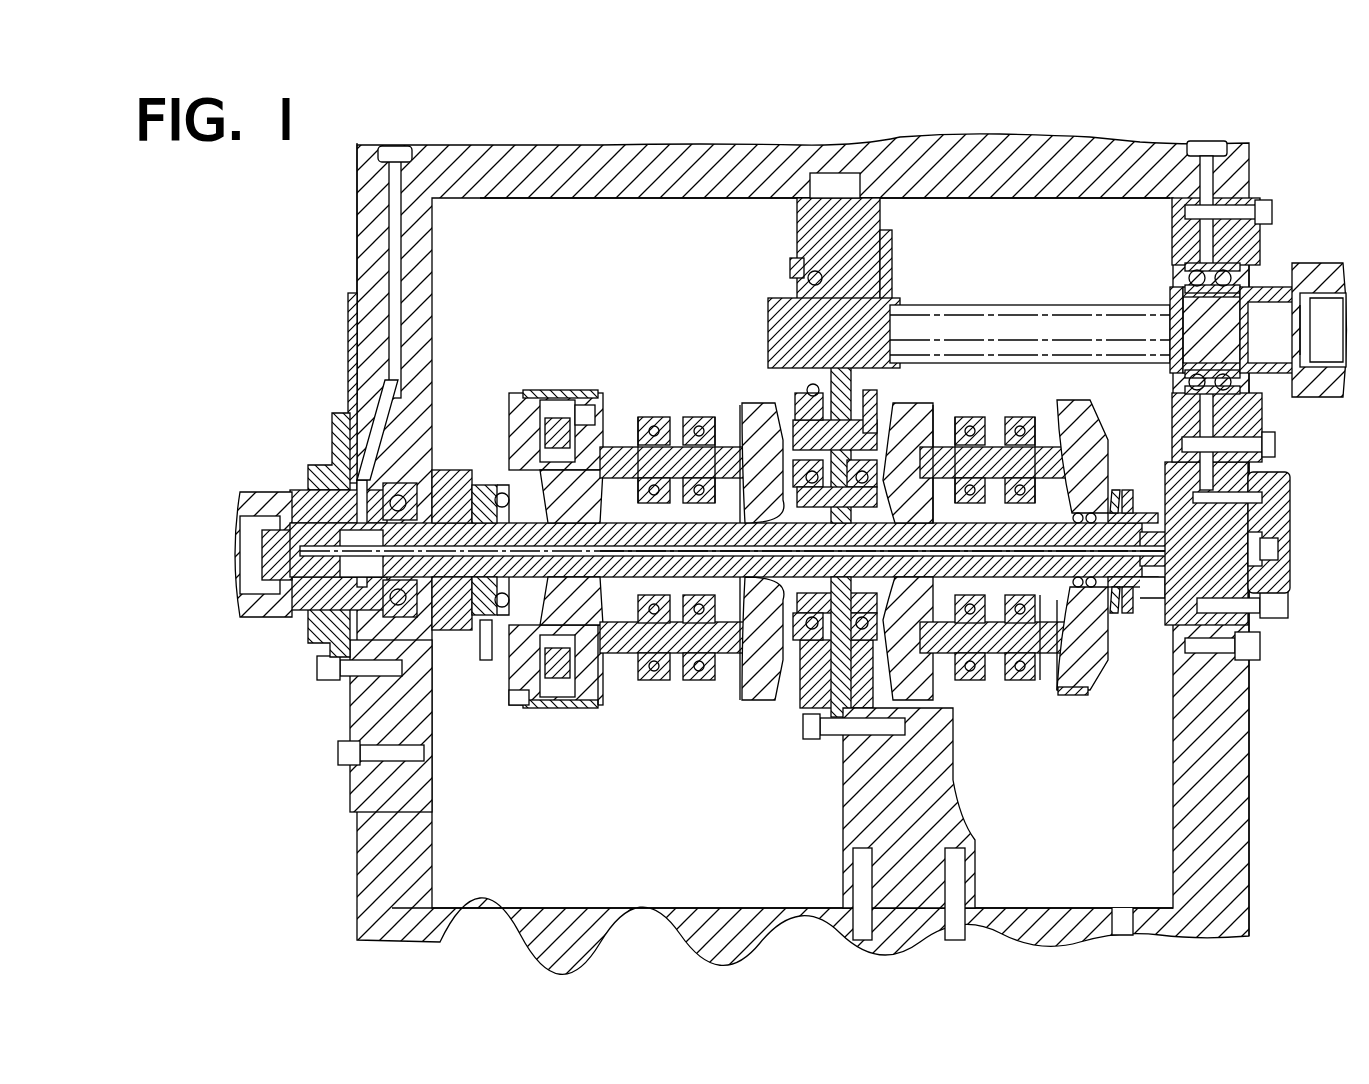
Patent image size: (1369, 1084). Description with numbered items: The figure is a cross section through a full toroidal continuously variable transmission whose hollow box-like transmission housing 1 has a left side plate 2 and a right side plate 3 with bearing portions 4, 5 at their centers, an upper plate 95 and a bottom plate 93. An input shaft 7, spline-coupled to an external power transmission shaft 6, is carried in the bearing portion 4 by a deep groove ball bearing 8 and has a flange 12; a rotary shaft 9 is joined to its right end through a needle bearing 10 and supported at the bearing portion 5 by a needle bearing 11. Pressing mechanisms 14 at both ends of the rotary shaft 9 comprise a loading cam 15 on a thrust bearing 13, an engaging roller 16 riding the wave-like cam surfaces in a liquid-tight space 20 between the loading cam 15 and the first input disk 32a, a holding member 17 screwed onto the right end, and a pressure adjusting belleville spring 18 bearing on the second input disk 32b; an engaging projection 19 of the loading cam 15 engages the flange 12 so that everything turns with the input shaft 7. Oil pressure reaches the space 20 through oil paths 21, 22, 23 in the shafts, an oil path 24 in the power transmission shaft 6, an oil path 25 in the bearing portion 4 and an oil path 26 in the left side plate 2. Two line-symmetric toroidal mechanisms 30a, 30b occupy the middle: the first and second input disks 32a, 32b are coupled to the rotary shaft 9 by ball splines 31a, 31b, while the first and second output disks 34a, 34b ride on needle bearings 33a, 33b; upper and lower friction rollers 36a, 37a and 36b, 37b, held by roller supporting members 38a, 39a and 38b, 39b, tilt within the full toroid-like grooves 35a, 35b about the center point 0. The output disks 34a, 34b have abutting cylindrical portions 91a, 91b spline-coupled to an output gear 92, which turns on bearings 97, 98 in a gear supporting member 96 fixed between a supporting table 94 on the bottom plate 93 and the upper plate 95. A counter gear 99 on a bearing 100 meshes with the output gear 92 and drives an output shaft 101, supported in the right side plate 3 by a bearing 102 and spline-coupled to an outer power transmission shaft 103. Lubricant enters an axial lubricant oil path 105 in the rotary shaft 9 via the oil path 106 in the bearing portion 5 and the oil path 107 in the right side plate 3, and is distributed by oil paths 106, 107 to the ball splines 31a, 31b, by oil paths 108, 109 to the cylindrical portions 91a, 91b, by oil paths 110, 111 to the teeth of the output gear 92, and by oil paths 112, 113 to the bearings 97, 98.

The transmission housing 1 is at (660, 178).
The left side plate 2 is at (372, 235).
The right side plate 3 is at (1248, 778).
The bearing portion 4 is at (352, 358).
The bearing portion 5 is at (1242, 598).
The external power transmission shaft 6 is at (262, 605).
The input shaft 7 is at (300, 568).
The deep groove ball bearing 8 is at (436, 470).
The rotary shaft 9 is at (636, 470).
The center point O 0 is at (672, 470).
The needle bearing 10 is at (473, 500).
The needle bearing 11 is at (1162, 595).
The flange 12 is at (446, 645).
The thrust bearing 13 is at (500, 470).
The pressing mechanism 14 is at (515, 710).
The loading cam 15 is at (520, 470).
The engaging roller 16 is at (554, 412).
The holding member 17 is at (1140, 590).
The pressure adjusting belleville spring 18 is at (1113, 495).
The engaging projection 19 is at (488, 632).
The space 20 is at (566, 440).
The oil path 21 is at (525, 692).
The oil path 22 is at (447, 490).
The oil path 23 is at (300, 500).
The oil path 24 is at (335, 462).
The oil path 25 is at (372, 400).
The oil path 26 is at (388, 275).
The first toroidal type continuously variable transmission mechanism 30a is at (655, 722).
The second toroidal type continuously variable transmission mechanism 30b is at (1030, 695).
The ball spline 31a is at (562, 708).
The ball spline 31b is at (1092, 672).
The first input disk 32a is at (605, 705).
The second input disk 32b is at (1082, 695).
The needle bearing 33a is at (736, 470).
The needle bearing 33b is at (962, 688).
The first output disk 34a is at (748, 665).
The second output disk 34b is at (955, 735).
The full toroid-like groove 35a is at (612, 445).
The full toroid-like groove 35b is at (1036, 425).
The upper friction roller 36a is at (690, 470).
The upper friction roller 36b is at (932, 475).
The lower friction roller 37a is at (722, 680).
The lower friction roller 37b is at (1055, 692).
The roller supporting member 38a is at (662, 430).
The roller supporting member 38b is at (962, 460).
The roller supporting member 39a is at (620, 705).
The roller supporting member 39b is at (978, 682).
The cylindrical portion 91a is at (810, 645).
The cylindrical portion 91b is at (900, 540).
The output gear 92 is at (892, 440).
The bottom plate 93 is at (690, 925).
The supporting table 94 is at (848, 876).
The upper plate 95 is at (600, 182).
The gear supporting member 96 is at (870, 246).
The bearing 97 is at (802, 635).
The bearing 98 is at (852, 770).
The counter gear 99 is at (848, 262).
The bearing 100 is at (795, 262).
The output shaft 101 is at (1046, 322).
The bearing 102 is at (1172, 265).
The outer power transmission shaft 103 is at (1320, 262).
The lubricant oil path 105 is at (1265, 560).
The oil path 106 is at (1278, 495).
The oil path 107 is at (1265, 405).
The oil path 108 is at (978, 460).
The oil path 109 is at (986, 625).
The oil path 110 is at (778, 440).
The oil path 111 is at (800, 740).
The oil path 112 is at (700, 585).
The oil path 113 is at (830, 745).